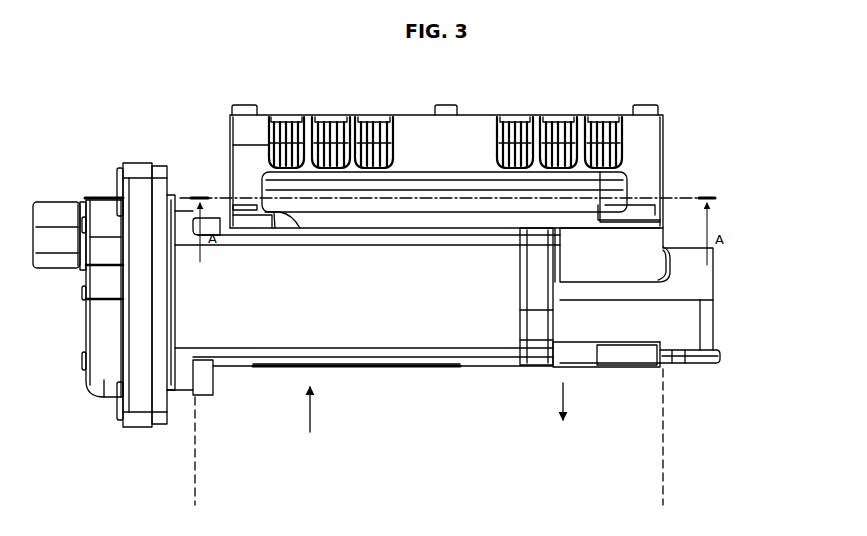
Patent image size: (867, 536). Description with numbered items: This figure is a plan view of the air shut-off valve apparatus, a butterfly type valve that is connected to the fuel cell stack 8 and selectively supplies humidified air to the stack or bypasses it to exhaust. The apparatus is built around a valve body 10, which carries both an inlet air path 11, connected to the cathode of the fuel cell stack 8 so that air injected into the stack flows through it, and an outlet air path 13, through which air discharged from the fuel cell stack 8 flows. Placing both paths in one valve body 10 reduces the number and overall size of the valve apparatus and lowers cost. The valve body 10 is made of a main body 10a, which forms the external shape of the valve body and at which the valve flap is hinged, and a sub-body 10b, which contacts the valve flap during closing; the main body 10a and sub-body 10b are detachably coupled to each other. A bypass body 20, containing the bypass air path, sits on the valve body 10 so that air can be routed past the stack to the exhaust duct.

The fuel cell stack 8 is at (195, 451).
The valve body 10 is at (700, 316).
The main body 10a is at (703, 332).
The sub-body 10b is at (707, 358).
The inlet air path 11 is at (530, 374).
The outlet air path 13 is at (383, 375).
The bypass body 20 is at (467, 187).